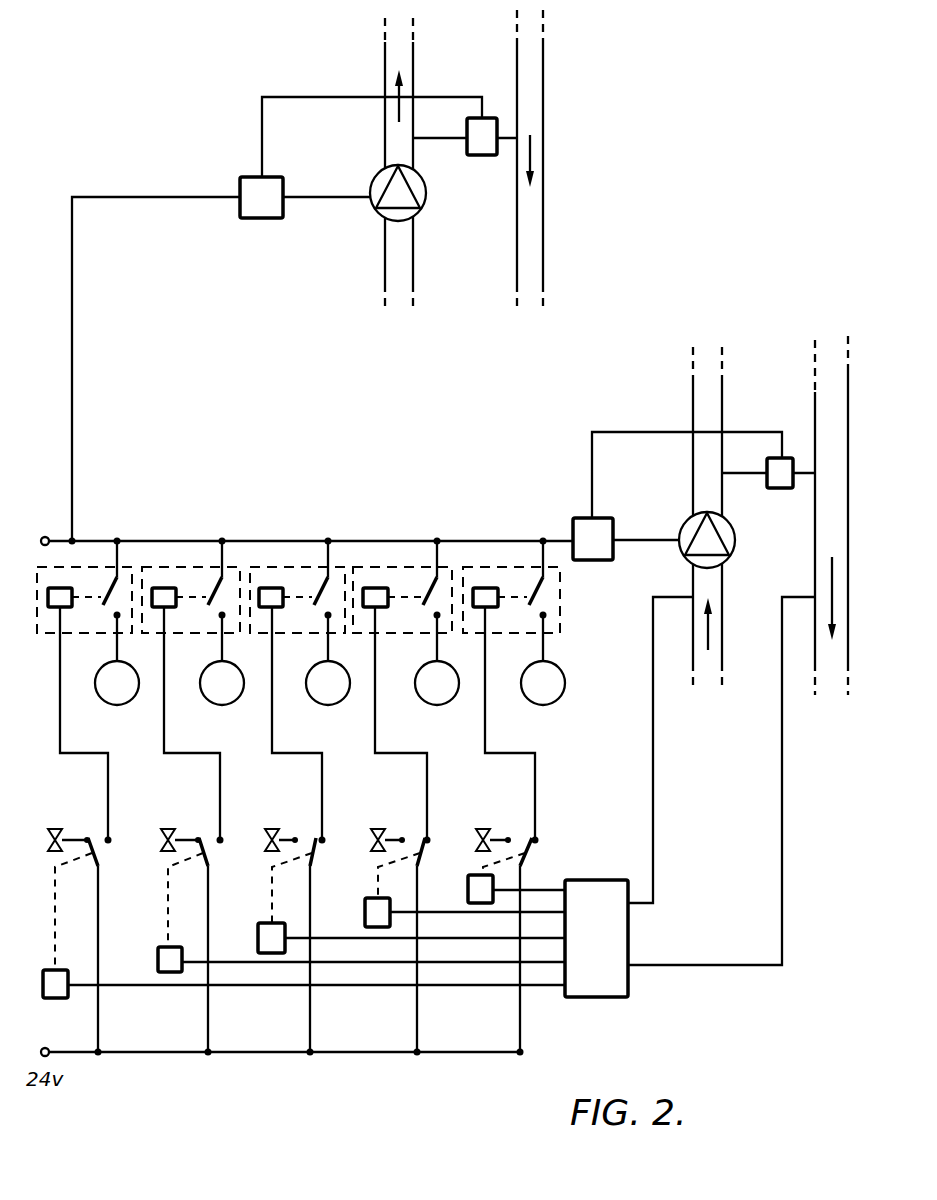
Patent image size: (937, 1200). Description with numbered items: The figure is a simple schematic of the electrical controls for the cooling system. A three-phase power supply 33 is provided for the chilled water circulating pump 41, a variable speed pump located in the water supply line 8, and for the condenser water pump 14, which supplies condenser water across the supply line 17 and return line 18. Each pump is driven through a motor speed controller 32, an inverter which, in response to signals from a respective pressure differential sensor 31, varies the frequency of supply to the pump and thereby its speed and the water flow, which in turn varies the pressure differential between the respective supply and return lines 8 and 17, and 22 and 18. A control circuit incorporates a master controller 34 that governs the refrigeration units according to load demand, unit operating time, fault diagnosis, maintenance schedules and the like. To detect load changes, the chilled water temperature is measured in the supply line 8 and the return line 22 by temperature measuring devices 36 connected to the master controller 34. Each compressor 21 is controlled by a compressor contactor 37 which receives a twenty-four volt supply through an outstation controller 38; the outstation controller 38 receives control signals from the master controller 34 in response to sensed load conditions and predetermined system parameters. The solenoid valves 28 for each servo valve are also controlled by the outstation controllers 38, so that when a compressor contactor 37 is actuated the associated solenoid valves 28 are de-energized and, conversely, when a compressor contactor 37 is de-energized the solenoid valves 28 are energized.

The water supply line 8 is at (718, 628).
The condenser water pump 14 is at (370, 208).
The supply line 17 is at (398, 248).
The return line 18 is at (538, 245).
The compressor 21 is at (330, 660).
The return line 22 is at (825, 648).
The solenoid valves 28 is at (57, 830).
The pressure differential sensors 31 is at (490, 130).
The motor speed controller 32 is at (253, 190).
The 3-phase power supply 33 is at (46, 537).
The master controller 34 is at (605, 973).
The temperature measuring devices 36 is at (690, 595).
The compressor contactor 37 is at (50, 634).
The outstation controller 38 is at (68, 992).
The circulating pump 41 is at (695, 518).